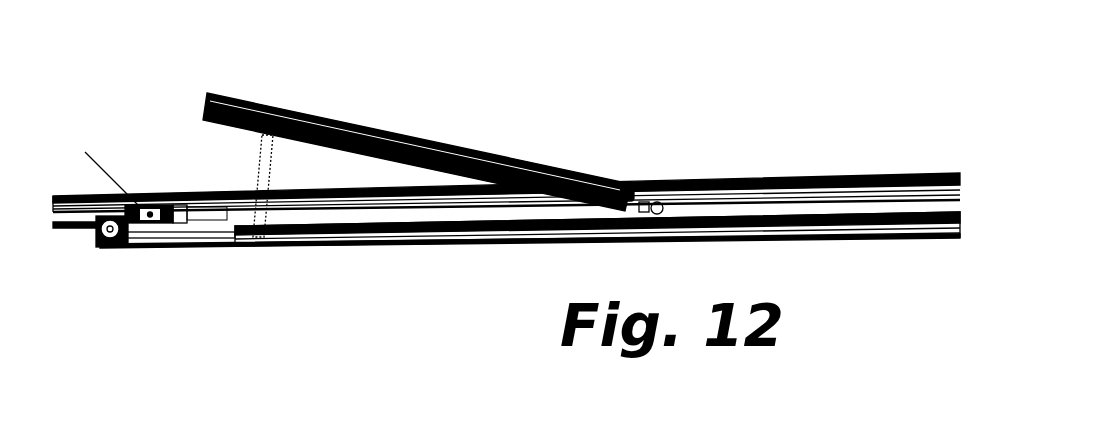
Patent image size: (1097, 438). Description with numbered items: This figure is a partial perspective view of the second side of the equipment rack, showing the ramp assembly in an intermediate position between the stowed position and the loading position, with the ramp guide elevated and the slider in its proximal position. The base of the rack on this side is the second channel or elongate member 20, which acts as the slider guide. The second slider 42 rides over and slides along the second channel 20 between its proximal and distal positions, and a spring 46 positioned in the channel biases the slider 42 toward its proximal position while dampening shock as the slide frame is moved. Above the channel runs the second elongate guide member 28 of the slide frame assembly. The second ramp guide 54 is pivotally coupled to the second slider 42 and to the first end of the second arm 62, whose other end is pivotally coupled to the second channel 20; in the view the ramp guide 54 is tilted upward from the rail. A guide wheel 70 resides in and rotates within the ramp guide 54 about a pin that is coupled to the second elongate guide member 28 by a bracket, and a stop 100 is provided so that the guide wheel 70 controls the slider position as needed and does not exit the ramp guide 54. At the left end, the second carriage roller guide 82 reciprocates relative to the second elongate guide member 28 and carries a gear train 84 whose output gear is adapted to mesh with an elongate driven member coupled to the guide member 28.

The second channel or elongate member 20 is at (435, 242).
The second elongate guide member 28 is at (753, 182).
The second slider 42 is at (783, 215).
The spring 46 is at (913, 220).
The second ramp guide 54 is at (387, 132).
The second arm 62 is at (257, 162).
The guide wheel 70 is at (628, 183).
The second carriage roller guide 82 is at (148, 233).
The gear train 84 is at (112, 232).
The stop 100 is at (640, 212).